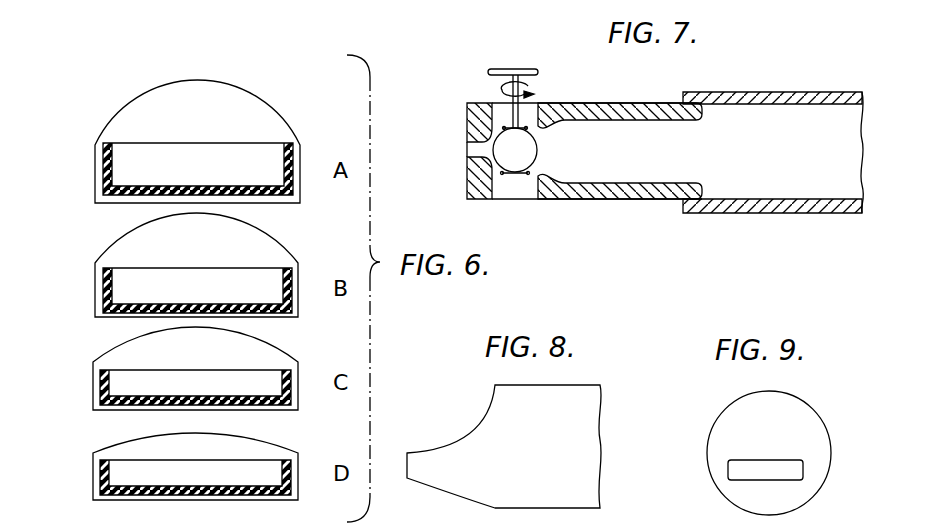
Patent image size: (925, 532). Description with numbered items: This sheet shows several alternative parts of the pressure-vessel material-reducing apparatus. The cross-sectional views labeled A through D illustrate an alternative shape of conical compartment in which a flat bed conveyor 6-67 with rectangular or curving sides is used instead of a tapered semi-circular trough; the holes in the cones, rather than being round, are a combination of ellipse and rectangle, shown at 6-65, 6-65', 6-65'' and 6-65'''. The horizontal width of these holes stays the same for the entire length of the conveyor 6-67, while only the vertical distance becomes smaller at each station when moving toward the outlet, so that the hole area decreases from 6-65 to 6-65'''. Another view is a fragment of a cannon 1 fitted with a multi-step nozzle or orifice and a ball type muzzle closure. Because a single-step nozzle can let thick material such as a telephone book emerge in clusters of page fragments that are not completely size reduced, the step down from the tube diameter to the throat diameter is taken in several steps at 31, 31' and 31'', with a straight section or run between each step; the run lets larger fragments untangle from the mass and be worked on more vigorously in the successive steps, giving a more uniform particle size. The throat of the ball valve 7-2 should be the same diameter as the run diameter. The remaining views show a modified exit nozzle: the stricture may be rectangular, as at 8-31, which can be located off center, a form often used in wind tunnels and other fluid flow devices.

In FIG. 6, the hole 6-65 is at (170, 141).
In FIG. 6, the hole 6-65' is at (164, 265).
In FIG. 6, the hole 6-65'' is at (165, 367).
In FIG. 6, the hole 6-65''' is at (155, 462).
In FIG. 6, the conveyor 6-67 is at (242, 186).
In FIG. 7, the nozzle step 31'' is at (457, 148).
In FIG. 7, the ball valve 7-2 is at (531, 148).
In FIG. 7, the nozzle step 31' is at (620, 177).
In FIG. 7, the cannon 1 is at (778, 93).
In FIG. 7, the nozzle 31 is at (645, 151).
In FIG. 8, the rectangular nozzle 8-31 is at (473, 428).
In FIG. 9, the rectangular nozzle 8-31 is at (738, 460).